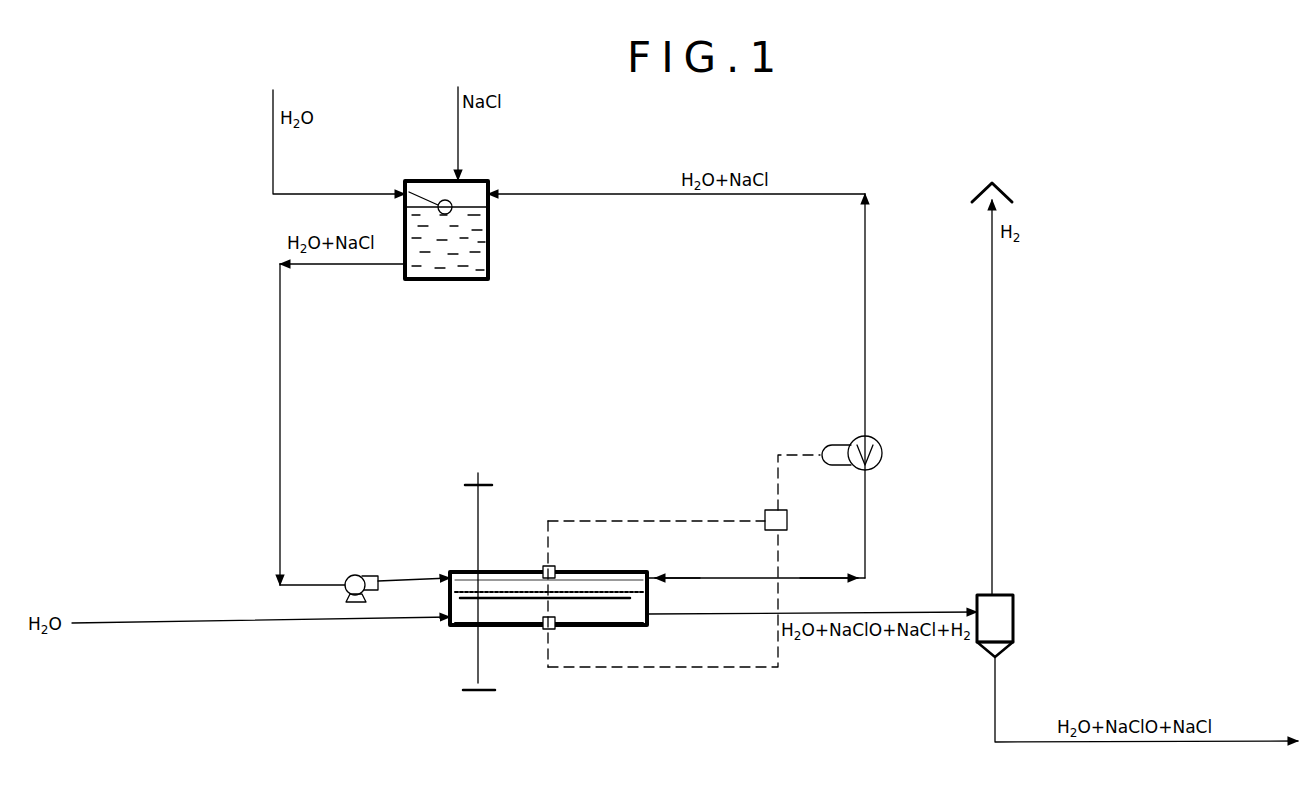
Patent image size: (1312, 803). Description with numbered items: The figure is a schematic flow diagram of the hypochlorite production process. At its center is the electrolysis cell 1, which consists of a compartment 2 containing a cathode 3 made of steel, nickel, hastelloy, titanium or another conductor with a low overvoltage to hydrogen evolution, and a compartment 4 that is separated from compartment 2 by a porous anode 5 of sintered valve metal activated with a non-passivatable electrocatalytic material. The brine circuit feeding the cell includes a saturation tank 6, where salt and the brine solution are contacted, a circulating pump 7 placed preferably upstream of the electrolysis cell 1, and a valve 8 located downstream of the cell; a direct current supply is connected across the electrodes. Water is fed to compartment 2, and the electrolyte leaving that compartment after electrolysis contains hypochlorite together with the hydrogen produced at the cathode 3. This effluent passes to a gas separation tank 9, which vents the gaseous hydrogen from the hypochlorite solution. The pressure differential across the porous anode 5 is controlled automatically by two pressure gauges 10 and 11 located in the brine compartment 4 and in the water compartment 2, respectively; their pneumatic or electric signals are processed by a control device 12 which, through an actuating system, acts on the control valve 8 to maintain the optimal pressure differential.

The electrolysis cell 1 is at (458, 632).
The compartment 2 is at (616, 625).
The cathode 3 is at (516, 600).
The compartment 4 is at (626, 578).
The porous anode 5 is at (590, 590).
The saturation tank 6 is at (488, 242).
The circulating pump 7 is at (357, 575).
The control valve 8 is at (872, 441).
The gas separation tank 9 is at (1003, 614).
The pressure gauge 10 is at (545, 567).
The pressure gauge 11 is at (556, 627).
The controller 12 is at (771, 512).